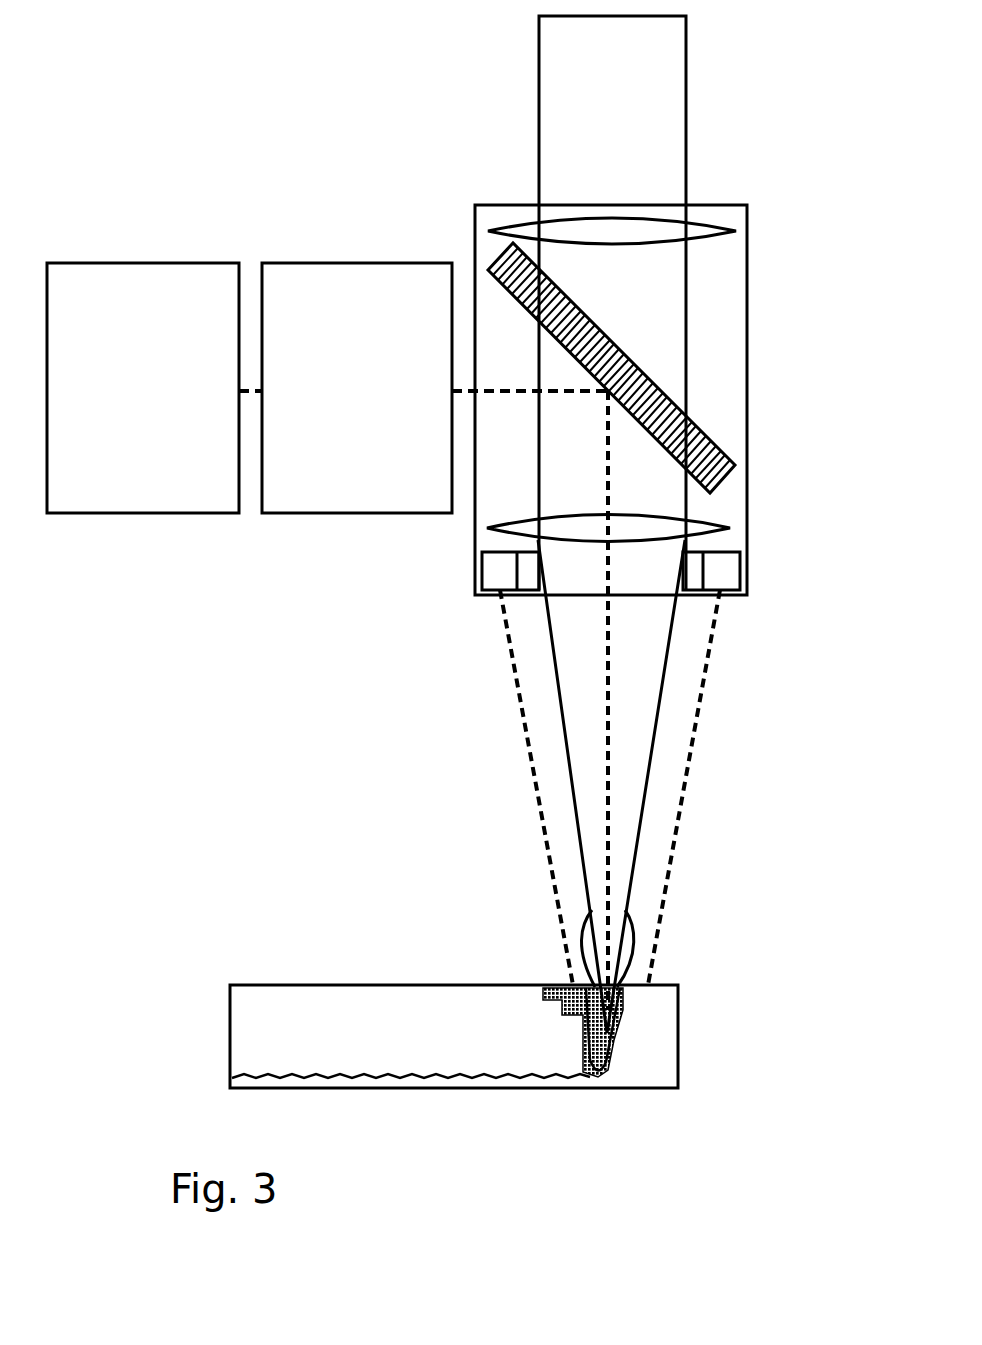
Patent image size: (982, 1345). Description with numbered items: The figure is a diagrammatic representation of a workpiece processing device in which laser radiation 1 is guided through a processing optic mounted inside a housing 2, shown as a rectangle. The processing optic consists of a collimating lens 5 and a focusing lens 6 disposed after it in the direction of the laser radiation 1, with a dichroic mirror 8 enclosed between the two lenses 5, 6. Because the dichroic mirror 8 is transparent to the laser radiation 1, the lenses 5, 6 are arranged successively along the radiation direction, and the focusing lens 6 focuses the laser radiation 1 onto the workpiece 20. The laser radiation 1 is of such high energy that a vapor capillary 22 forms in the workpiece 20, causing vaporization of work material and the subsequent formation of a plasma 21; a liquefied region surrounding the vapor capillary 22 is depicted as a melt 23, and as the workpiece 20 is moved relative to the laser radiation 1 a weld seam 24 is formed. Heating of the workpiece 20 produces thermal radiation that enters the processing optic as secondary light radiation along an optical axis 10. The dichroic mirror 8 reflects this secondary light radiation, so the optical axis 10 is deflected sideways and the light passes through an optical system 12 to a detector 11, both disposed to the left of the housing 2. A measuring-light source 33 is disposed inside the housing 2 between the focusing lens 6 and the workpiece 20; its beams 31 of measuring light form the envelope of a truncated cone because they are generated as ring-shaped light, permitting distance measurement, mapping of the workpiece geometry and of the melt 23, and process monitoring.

The laser radiation 1 is at (560, 90).
The housing 2 is at (747, 320).
The collimating lens 5 is at (562, 232).
The focusing lens 6 is at (560, 532).
The dichroic mirror 8 is at (707, 437).
The axis of light radiation 10 is at (607, 672).
The detector 11 is at (140, 293).
The optical system 12 is at (368, 293).
The workpiece 20 is at (662, 1043).
The plasma 21 is at (627, 950).
The vapor capillary 22 is at (610, 1050).
The melt 23 is at (547, 987).
The weld seam 24 is at (390, 1010).
The beams of measuring light 31 is at (545, 790).
The measuring-light source 33 is at (717, 567).